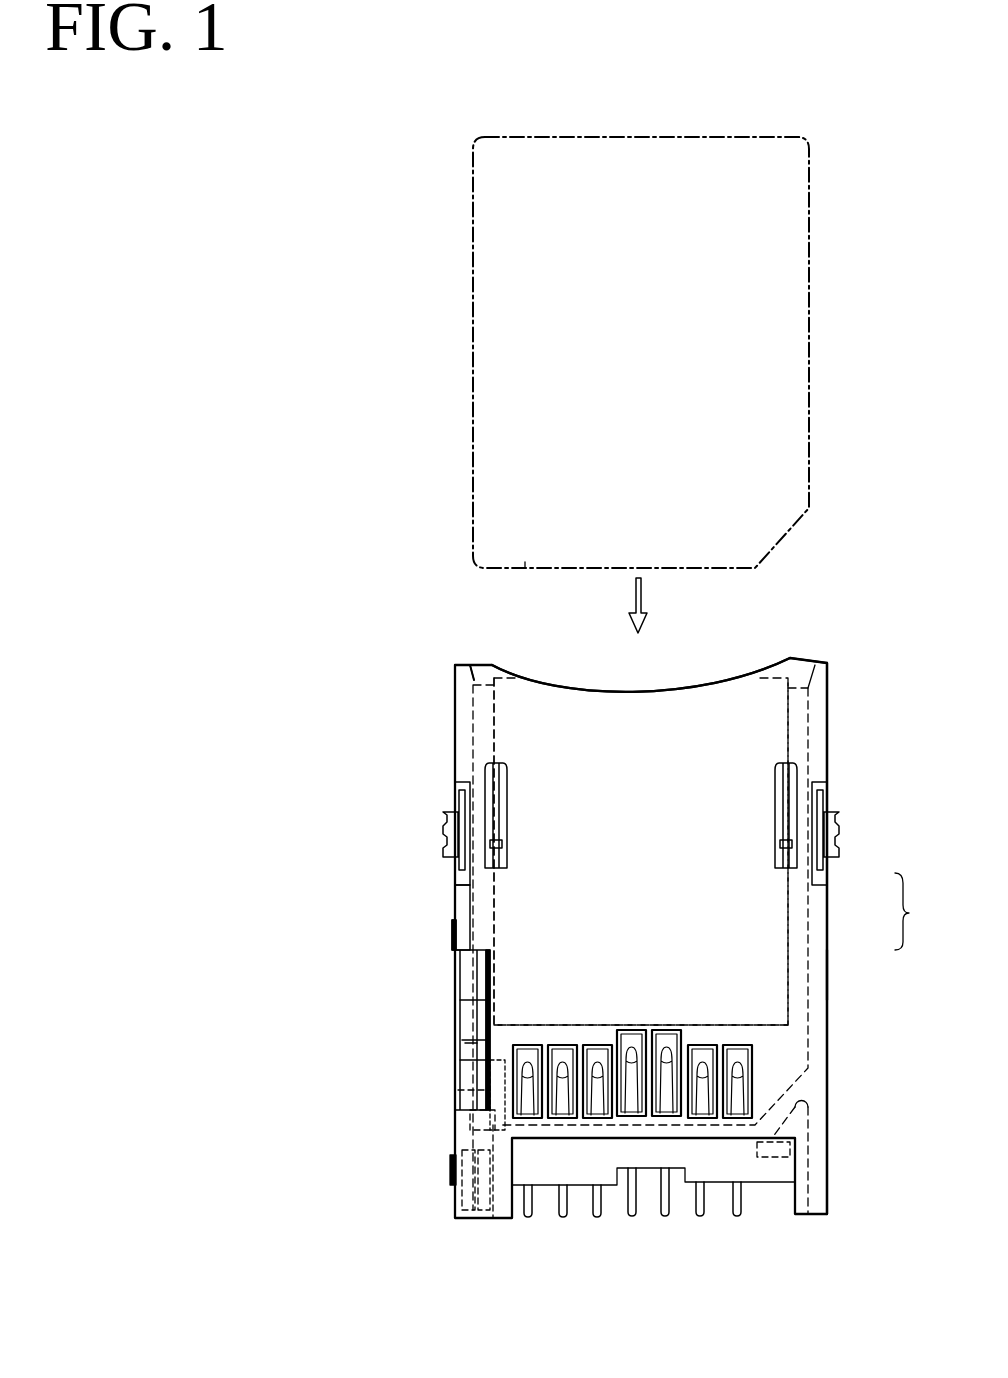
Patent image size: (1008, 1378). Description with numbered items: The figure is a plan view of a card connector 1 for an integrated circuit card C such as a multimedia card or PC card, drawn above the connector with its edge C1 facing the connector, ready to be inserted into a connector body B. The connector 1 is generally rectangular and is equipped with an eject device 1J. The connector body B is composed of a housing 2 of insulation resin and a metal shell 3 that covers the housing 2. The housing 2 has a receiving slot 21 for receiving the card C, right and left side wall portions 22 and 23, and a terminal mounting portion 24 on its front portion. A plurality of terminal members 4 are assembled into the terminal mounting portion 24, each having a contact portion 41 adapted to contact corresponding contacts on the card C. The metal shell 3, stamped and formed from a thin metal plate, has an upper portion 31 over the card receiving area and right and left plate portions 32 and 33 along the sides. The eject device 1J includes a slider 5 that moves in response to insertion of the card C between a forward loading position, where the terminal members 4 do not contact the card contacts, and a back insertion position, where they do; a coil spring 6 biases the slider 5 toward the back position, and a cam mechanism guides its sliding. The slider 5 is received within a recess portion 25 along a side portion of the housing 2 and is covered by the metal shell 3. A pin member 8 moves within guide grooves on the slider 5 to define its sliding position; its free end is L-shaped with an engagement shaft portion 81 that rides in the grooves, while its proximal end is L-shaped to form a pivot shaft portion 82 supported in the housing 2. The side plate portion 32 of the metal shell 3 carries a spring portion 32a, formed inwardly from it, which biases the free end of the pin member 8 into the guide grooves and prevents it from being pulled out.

The integrated circuit card C is at (473, 214).
The card edge C1 is at (525, 570).
The connector 1 is at (420, 717).
The eject device 1J is at (424, 1078).
The housing 2 is at (822, 900).
The metal shell 3 is at (780, 945).
The connector body B is at (909, 913).
The terminal members 4 is at (636, 1200).
The slider 5 is at (470, 1122).
The coil spring 6 is at (493, 1222).
The pin member 8 is at (460, 1092).
The receiving slot 21 is at (683, 688).
The side wall portion 22 is at (455, 685).
The side wall portion 23 is at (830, 697).
The terminal mounting portion 24 is at (790, 1055).
The recess portion 25 is at (458, 1020).
The upper portion 31 is at (660, 835).
The side plate portion 32 is at (455, 903).
The spring portion 32a is at (458, 977).
The side plate portion 33 is at (828, 975).
The contact portion 41 is at (733, 1045).
The engagement shaft portion 81 is at (452, 1165).
The pivot shaft portion 82 is at (462, 1043).